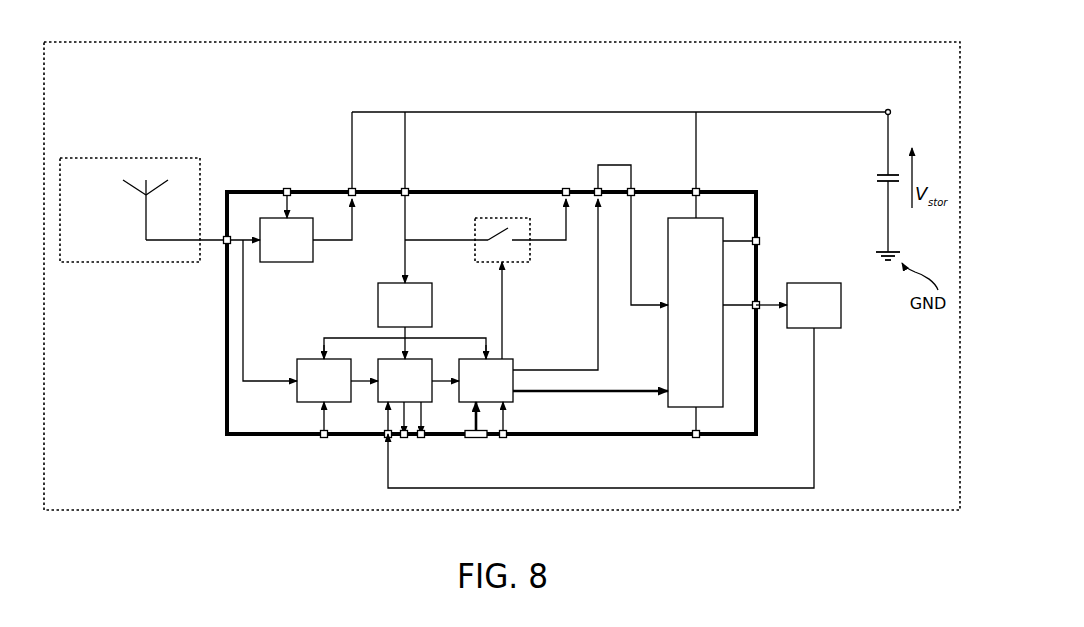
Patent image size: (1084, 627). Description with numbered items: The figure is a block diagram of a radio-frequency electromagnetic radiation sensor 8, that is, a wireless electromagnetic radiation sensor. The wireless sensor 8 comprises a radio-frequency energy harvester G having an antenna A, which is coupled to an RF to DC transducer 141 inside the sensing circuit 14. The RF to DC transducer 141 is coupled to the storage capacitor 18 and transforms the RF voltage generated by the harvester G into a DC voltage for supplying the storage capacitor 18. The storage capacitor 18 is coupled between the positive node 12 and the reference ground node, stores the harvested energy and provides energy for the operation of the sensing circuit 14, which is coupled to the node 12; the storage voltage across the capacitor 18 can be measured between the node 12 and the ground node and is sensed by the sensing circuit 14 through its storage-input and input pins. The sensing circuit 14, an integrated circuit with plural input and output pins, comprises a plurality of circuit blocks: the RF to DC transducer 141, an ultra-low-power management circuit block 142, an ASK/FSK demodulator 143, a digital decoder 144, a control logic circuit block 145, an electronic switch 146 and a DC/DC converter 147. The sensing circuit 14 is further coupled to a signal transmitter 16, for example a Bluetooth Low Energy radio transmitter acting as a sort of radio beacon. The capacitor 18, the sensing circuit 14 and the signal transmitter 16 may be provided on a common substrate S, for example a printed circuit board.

The radio-frequency electromagnetic radiation sensor 8 is at (253, 114).
The node 12 is at (886, 109).
The sensing circuit 14 is at (233, 408).
The signal transmitter 16 is at (614, 385).
The storage capacitor 18 is at (878, 188).
The RF to DC transducer 141 is at (306, 227).
The ultra-low-power management circuit block 142 is at (405, 275).
The ASK/FSK demodulator 143 is at (337, 396).
The digital decoder 144 is at (418, 396).
The control logic circuit block 145 is at (563, 316).
The electronic switch 146 is at (512, 258).
The DC/DC converter 147 is at (693, 313).
The antenna A is at (137, 197).
The radio-frequency energy harvester G is at (125, 260).
The common substrate S is at (718, 52).